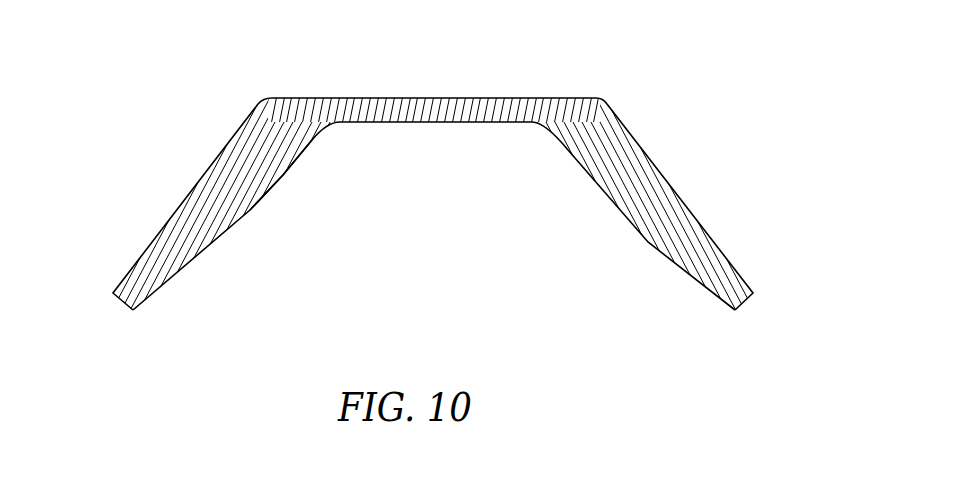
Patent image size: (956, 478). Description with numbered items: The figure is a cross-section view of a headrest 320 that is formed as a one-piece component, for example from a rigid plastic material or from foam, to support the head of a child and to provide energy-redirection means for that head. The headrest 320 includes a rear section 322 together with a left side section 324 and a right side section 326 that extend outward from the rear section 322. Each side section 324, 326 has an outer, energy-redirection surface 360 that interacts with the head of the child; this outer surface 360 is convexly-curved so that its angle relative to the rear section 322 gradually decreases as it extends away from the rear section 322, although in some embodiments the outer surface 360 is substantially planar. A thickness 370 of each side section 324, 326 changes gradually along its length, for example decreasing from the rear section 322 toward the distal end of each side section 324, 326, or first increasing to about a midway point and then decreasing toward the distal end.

The headrest 320 is at (667, 65).
The rear section 322 is at (483, 81).
The left side section 324 is at (157, 165).
The right side section 326 is at (715, 190).
The outer energy-redirection surface 360 is at (178, 277).
The thickness 370 is at (187, 108).